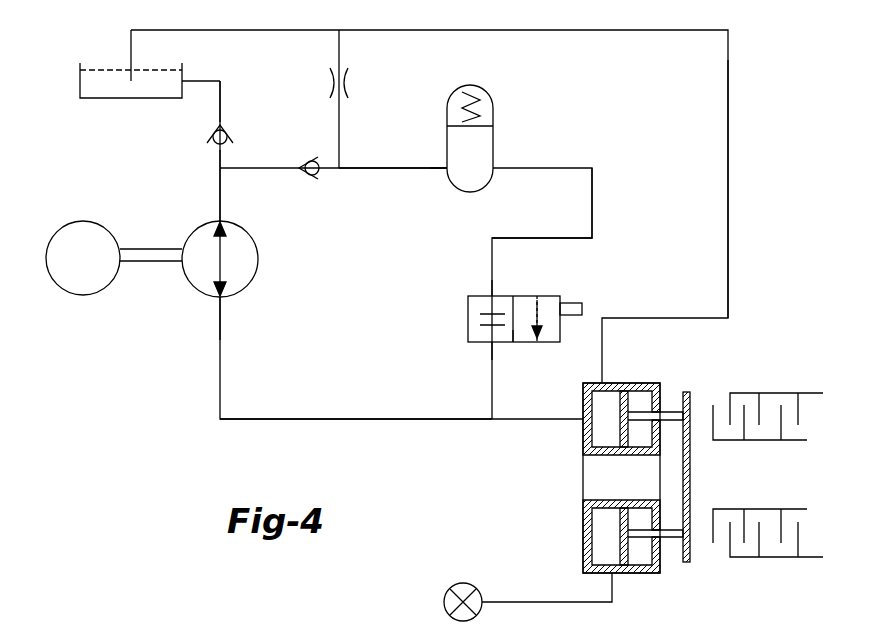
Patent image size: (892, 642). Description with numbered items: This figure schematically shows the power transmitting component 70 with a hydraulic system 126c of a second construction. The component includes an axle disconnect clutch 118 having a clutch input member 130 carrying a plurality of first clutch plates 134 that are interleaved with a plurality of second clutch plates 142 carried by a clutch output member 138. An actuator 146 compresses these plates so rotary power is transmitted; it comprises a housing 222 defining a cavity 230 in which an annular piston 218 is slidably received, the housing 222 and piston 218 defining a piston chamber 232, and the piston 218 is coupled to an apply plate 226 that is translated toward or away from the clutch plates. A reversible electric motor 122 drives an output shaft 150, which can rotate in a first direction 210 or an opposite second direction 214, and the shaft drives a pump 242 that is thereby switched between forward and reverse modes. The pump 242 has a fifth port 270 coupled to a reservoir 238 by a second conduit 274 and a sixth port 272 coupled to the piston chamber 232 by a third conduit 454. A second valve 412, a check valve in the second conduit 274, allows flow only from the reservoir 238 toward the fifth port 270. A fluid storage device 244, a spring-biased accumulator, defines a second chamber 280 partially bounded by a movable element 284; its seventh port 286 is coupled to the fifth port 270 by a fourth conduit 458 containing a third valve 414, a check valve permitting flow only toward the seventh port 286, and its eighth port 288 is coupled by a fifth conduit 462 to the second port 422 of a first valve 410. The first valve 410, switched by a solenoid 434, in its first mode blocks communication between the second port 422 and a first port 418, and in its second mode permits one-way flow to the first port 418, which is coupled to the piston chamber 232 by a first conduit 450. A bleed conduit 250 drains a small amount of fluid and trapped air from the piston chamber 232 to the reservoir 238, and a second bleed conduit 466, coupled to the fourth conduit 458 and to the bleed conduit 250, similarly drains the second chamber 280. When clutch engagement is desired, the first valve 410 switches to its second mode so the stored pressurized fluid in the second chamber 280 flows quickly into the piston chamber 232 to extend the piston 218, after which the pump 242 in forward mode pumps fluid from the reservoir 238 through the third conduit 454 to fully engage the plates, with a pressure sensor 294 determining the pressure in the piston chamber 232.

The power transmitting component 70 is at (797, 144).
The reservoir 238 is at (80, 80).
The second conduit 274 is at (222, 100).
The second valve 412 is at (212, 137).
The second bleed conduit 466 is at (338, 48).
The fluid storage device 244 is at (458, 78).
The second chamber 280 is at (458, 135).
The movable element 284 is at (483, 118).
The eighth port 288 is at (493, 175).
The bleed conduit 250 is at (727, 140).
The fifth conduit 462 is at (593, 226).
The fourth conduit 458 is at (392, 172).
The seventh port 286 is at (445, 172).
The third valve 414 is at (312, 178).
The fifth port 270 is at (220, 222).
The motor 122 is at (65, 293).
The output shaft 150 is at (152, 262).
The first direction 210 is at (138, 280).
The second direction 214 is at (162, 282).
The pump 242 is at (188, 284).
The sixth port 272 is at (222, 298).
The first valve 410 is at (468, 316).
The second port 422 is at (492, 296).
The solenoid 434 is at (583, 308).
The first conduit 450 is at (503, 343).
The first port 418 is at (481, 343).
The third conduit 454 is at (260, 418).
The hydraulic system 126c is at (210, 436).
The housing 222 is at (595, 457).
The piston chamber 232 is at (633, 418).
The cavity 230 is at (632, 397).
The piston 218 is at (615, 545).
The actuator 146 is at (575, 532).
The apply plate 226 is at (690, 398).
The pressure sensor 294 is at (450, 590).
The axle disconnect clutch 118 is at (789, 435).
The clutch input member 130 is at (811, 393).
The first clutch plates 134 is at (799, 413).
The second clutch plates 142 is at (779, 419).
The clutch output member 138 is at (788, 442).